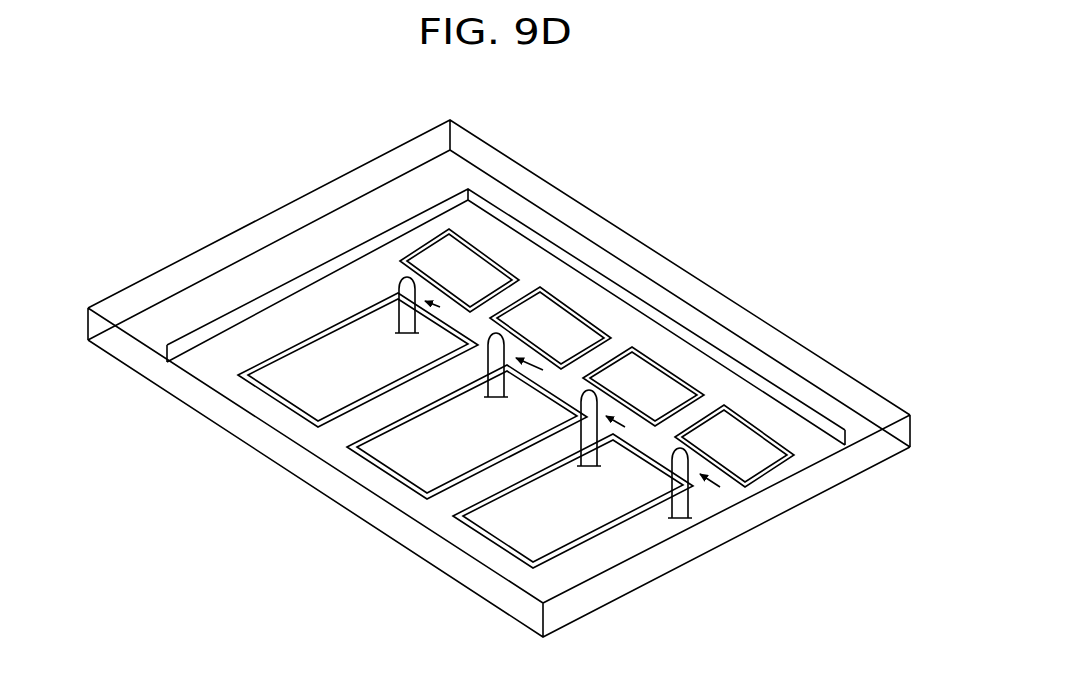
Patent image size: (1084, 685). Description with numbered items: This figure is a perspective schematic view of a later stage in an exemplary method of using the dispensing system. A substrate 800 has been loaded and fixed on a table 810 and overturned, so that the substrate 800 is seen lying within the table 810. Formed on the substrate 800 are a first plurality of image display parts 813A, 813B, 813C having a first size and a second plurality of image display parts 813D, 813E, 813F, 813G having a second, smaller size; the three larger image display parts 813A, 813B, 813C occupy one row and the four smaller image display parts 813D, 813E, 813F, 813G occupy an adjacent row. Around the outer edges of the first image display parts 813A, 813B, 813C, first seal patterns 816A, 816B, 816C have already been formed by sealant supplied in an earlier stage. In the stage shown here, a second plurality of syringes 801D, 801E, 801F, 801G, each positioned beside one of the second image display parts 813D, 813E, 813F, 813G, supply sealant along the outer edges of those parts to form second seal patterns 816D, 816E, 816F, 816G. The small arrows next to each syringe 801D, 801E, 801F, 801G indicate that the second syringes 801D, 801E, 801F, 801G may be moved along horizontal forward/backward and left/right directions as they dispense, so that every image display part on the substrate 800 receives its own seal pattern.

The substrate 800 is at (832, 455).
The table 810 is at (490, 157).
The image display part 813A is at (387, 367).
The image display part 813B is at (493, 438).
The image display part 813C is at (600, 505).
The image display part 813D is at (478, 278).
The image display part 813E is at (567, 336).
The image display part 813F is at (660, 394).
The image display part 813G is at (752, 453).
The first seal pattern 816A is at (318, 428).
The first seal pattern 816B is at (415, 492).
The first seal pattern 816C is at (522, 560).
The second seal pattern 816D is at (480, 253).
The second seal pattern 816E is at (575, 306).
The second seal pattern 816F is at (673, 370).
The second seal pattern 816G is at (768, 424).
The syringe 801D is at (393, 314).
The syringe 801E is at (487, 365).
The syringe 801F is at (578, 426).
The syringe 801G is at (693, 512).